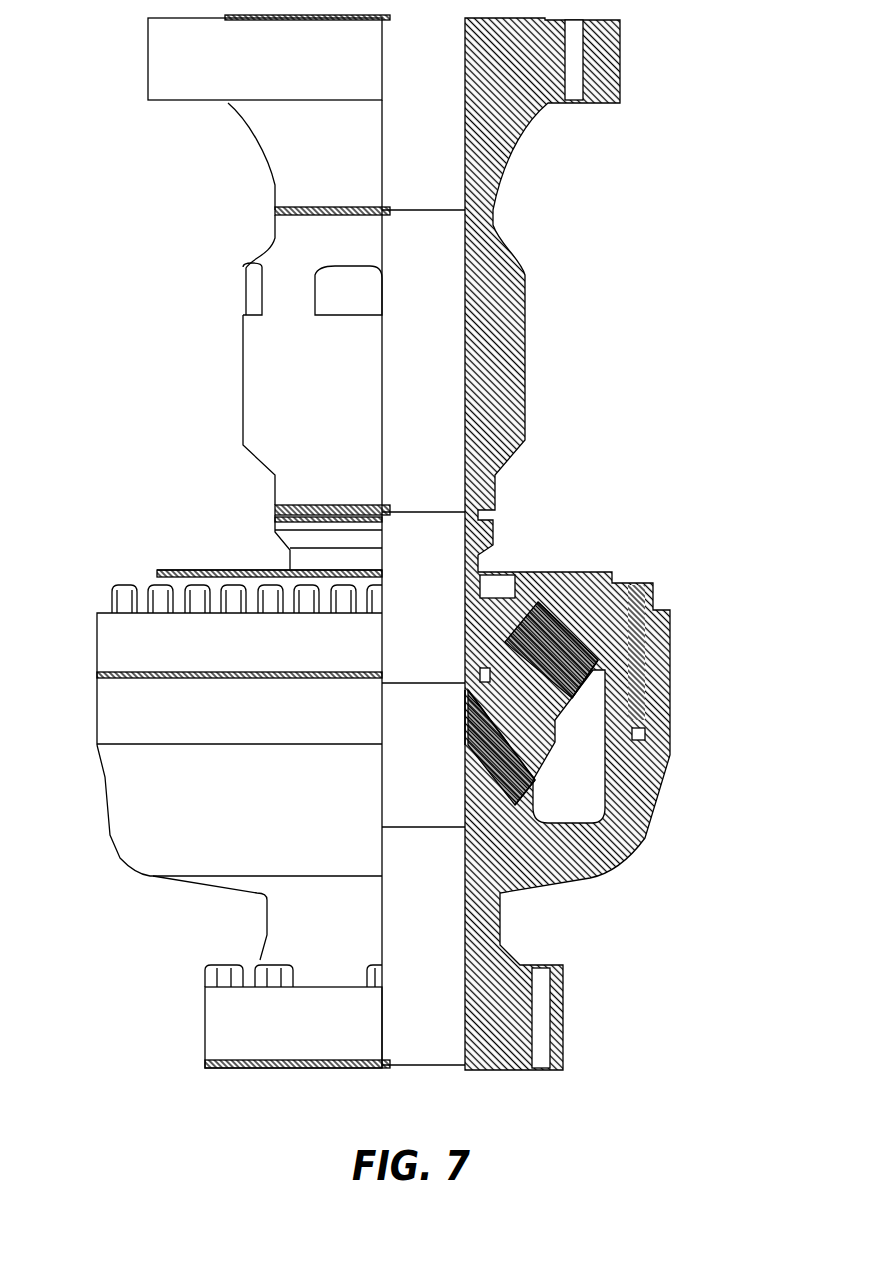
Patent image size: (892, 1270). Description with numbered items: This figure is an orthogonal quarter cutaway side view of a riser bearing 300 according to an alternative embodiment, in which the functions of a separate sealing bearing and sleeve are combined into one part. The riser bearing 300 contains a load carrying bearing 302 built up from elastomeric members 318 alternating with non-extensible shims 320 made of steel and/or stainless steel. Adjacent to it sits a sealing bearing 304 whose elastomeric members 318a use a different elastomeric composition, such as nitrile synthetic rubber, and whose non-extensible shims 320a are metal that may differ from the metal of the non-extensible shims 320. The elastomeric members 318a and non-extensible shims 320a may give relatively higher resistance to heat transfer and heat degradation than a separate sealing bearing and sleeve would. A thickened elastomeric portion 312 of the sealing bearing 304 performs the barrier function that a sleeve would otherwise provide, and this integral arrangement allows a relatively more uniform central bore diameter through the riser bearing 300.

The riser bearing 300 is at (683, 160).
The load carrying bearing 302 is at (518, 600).
The sealing bearing 304 is at (513, 798).
The thickened elastomeric portion 312 is at (465, 711).
The elastomeric members 318 is at (592, 672).
The non-extensible shims 320 is at (596, 675).
The elastomeric members 318a is at (530, 795).
The non-extensible shims 320a is at (535, 797).